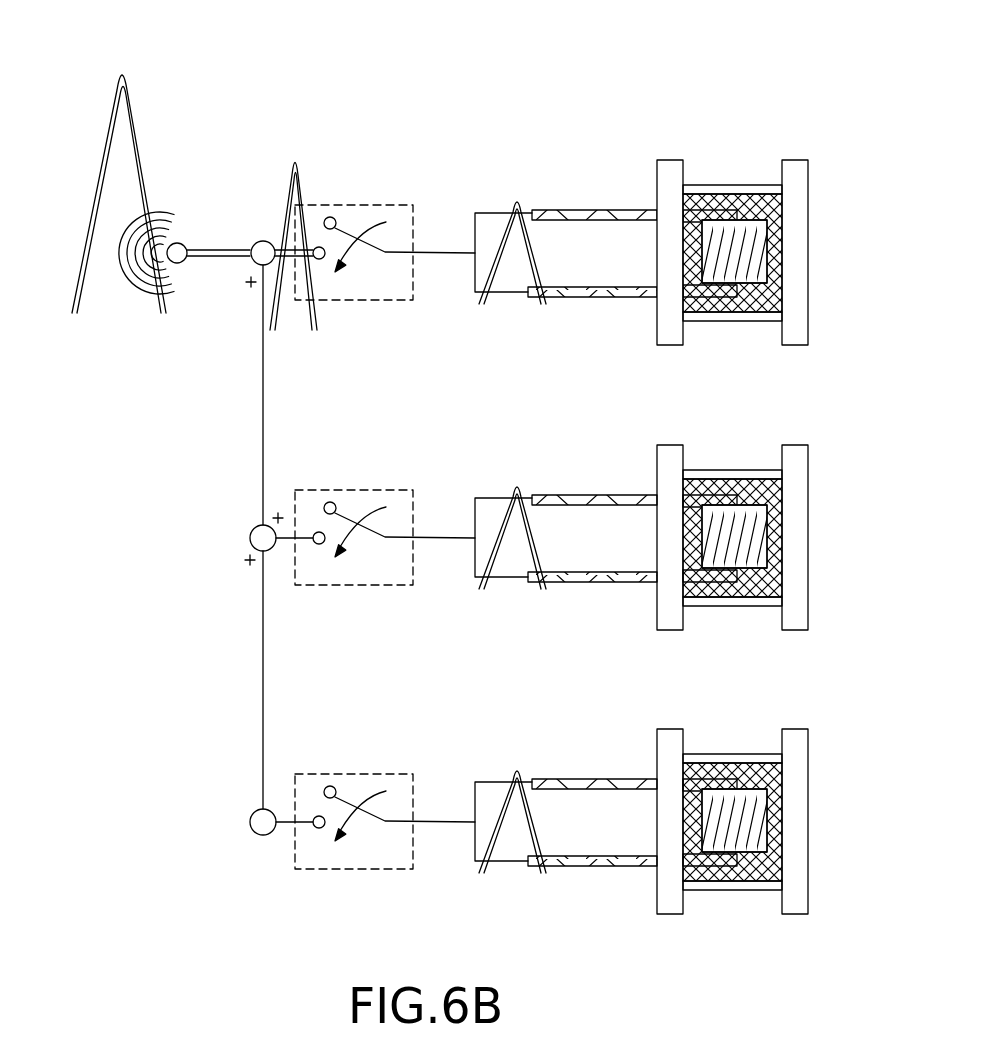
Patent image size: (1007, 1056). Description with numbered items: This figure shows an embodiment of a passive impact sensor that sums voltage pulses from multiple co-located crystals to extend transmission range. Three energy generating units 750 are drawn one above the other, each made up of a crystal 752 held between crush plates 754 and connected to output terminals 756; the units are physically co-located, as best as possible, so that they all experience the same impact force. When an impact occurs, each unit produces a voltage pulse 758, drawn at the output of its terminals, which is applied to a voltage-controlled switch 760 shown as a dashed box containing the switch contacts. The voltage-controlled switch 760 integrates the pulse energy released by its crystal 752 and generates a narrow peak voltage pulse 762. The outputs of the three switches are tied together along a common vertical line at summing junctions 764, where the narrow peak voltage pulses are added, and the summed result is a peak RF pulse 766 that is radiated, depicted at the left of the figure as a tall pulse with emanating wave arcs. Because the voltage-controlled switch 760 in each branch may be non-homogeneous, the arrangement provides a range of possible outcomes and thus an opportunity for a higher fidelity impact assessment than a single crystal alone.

The energy generating unit 750 is at (760, 70).
The crystal 752 is at (743, 276).
The crush plates 754 is at (797, 160).
The output terminals 756 is at (580, 210).
The voltage pulse 758 is at (507, 202).
The voltage-controlled switch 760 is at (380, 205).
The narrow peak voltage pulse 762 is at (295, 150).
The summing junction 764 is at (255, 263).
The peak RF pulse 766 is at (140, 105).